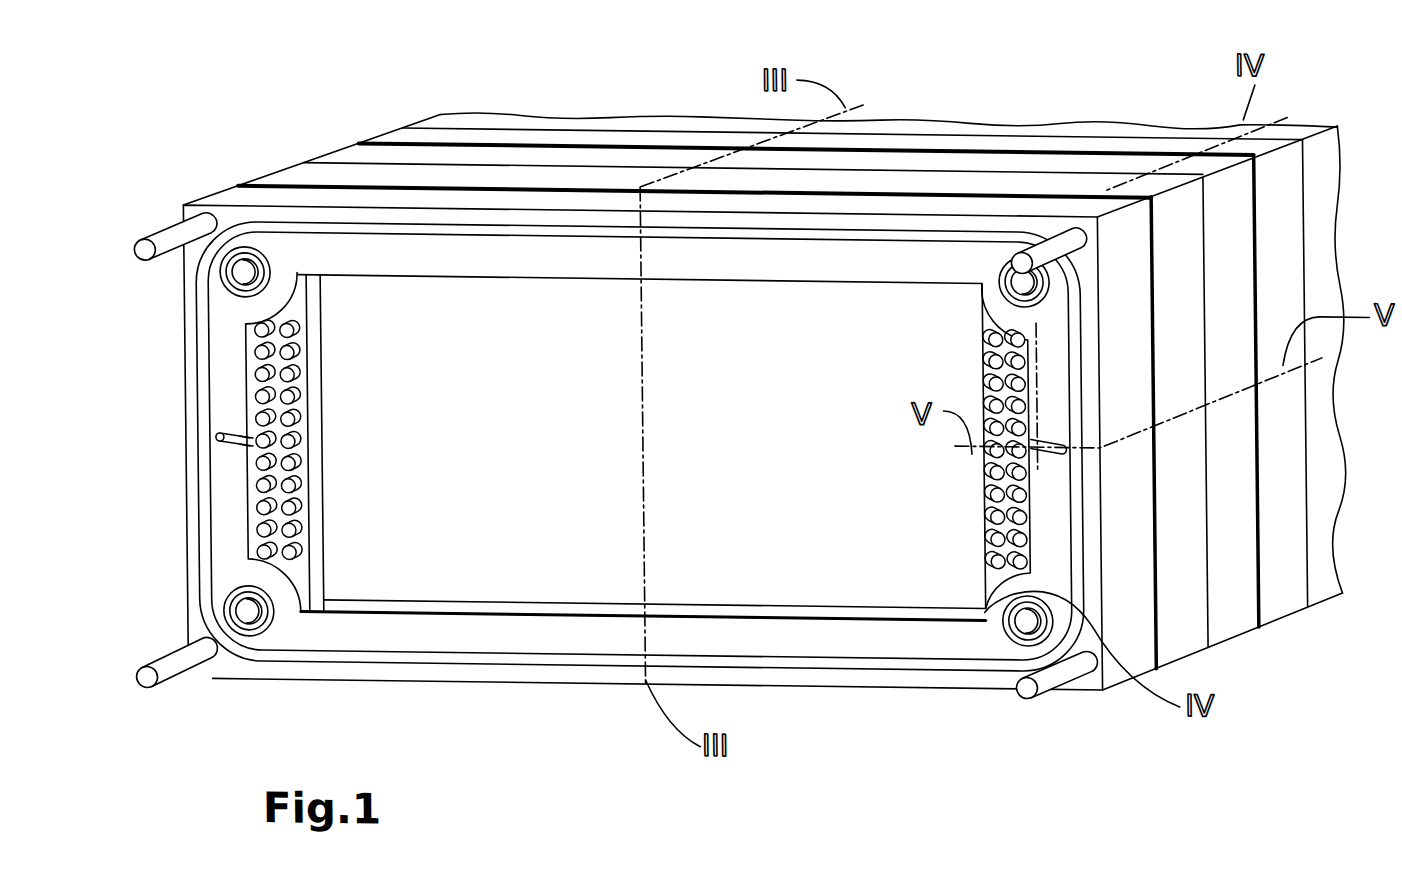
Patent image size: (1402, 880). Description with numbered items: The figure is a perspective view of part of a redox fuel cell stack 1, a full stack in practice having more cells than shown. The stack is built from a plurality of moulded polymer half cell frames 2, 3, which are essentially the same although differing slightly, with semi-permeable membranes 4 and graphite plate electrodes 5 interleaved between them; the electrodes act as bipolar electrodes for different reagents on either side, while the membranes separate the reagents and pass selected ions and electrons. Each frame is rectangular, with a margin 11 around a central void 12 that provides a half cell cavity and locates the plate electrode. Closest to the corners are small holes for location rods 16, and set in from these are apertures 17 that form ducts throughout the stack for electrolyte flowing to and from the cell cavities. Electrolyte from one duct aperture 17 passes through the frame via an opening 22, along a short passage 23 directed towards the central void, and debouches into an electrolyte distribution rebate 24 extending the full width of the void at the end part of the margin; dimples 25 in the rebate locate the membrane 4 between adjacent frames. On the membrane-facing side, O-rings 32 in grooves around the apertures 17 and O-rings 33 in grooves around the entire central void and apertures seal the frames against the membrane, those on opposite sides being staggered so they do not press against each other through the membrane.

The redox fuel cell stack 1 is at (949, 104).
The half cell frame 2 is at (341, 159).
The half cell frame 3 is at (428, 141).
The semi-permeable membrane 4 is at (1262, 574).
The graphite plate electrode 5 is at (764, 563).
The margin 11 is at (438, 638).
The central void 12 is at (854, 512).
The location rod 16 is at (1061, 665).
The aperture 17 is at (235, 298).
The opening 22 is at (233, 438).
The short passage 23 is at (233, 453).
The electrolyte distribution rebate 24 is at (305, 459).
The dimple 25 is at (300, 512).
The O-ring 32 is at (222, 282).
The O-ring 33 is at (566, 665).